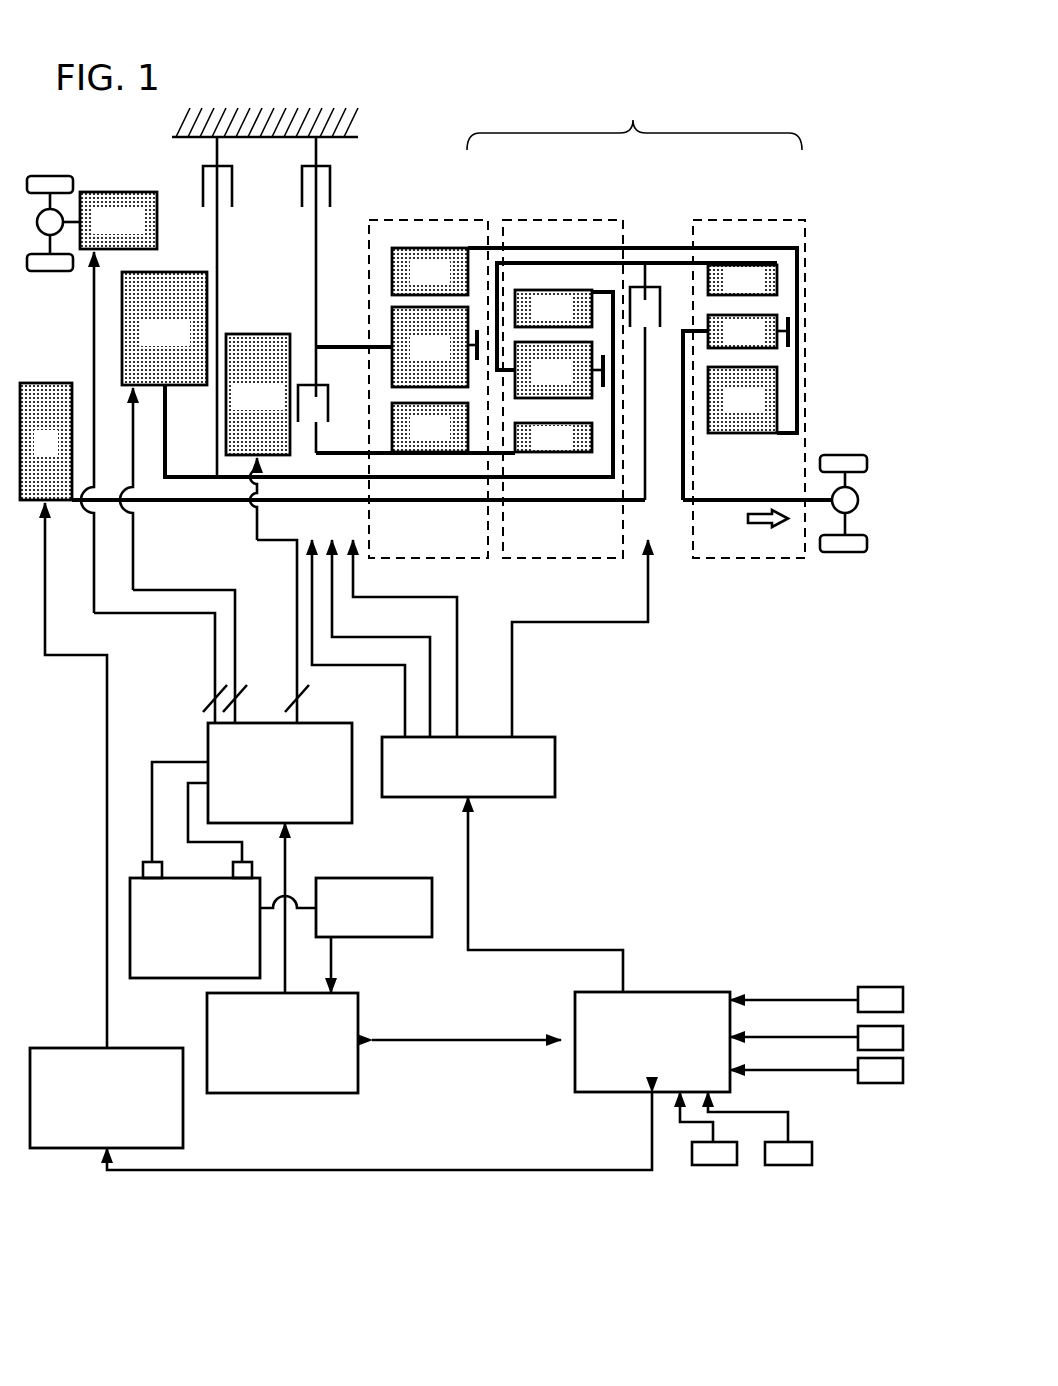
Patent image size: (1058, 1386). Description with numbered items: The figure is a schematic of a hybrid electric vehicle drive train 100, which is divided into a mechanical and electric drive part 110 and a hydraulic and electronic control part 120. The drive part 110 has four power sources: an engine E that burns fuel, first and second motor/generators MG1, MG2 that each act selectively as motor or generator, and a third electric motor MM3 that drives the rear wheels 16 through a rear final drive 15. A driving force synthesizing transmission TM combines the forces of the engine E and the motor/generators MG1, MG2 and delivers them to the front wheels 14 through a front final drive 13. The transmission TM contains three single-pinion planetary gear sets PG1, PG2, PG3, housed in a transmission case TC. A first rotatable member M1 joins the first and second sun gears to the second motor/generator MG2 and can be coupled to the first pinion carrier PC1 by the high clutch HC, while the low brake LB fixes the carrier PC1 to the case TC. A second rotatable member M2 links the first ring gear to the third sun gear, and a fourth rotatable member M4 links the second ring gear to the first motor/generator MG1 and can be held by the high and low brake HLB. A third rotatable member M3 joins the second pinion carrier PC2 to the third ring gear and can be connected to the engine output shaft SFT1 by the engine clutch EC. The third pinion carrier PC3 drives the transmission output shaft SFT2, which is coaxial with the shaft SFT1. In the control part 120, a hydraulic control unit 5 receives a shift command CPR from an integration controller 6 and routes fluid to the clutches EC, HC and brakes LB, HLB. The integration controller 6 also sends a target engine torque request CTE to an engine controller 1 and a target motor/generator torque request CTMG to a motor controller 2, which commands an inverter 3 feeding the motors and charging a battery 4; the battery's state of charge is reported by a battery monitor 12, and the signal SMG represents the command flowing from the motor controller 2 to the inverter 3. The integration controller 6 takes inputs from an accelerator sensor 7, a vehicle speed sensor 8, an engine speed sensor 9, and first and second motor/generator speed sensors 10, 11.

The engine controller 1 is at (80, 1048).
The motor controller 2 is at (356, 993).
The inverter 3 is at (322, 722).
The battery 4 is at (187, 878).
The hydraulic control unit 5 is at (555, 766).
The integration controller 6 is at (700, 992).
The accelerator sensor 7 is at (880, 987).
The vehicle speed sensor 8 is at (903, 1038).
The engine speed sensor 9 is at (870, 1083).
The first motor/generator speed sensor 10 is at (695, 1165).
The second motor/generator speed sensor 11 is at (782, 1165).
The battery monitor 12 is at (400, 878).
The front final drive 13 is at (840, 512).
The front wheels 14 is at (838, 455).
The rear final drive 15 is at (64, 213).
The rear wheels 16 is at (58, 176).
The drive train 100 is at (820, 722).
The mechanical and electric drive part 110 is at (703, 676).
The hydraulic and electronic control part 120 is at (684, 811).
The engine E is at (46, 441).
The first motor/generator MG1 is at (164, 328).
The second motor/generator MG2 is at (258, 394).
The third electric motor MM3 is at (118, 220).
The driving force synthesizing transmission TM is at (634, 118).
The transmission case TC is at (352, 137).
The first planetary gear set PG1 is at (390, 218).
The second planetary gear set PG2 is at (522, 218).
The third planetary gear set PG3 is at (723, 218).
The high and low brake HLB is at (203, 184).
The low brake LB is at (298, 191).
The high clutch HC is at (328, 401).
The engine clutch EC is at (655, 318).
The first rotatable member M1 is at (505, 453).
The second rotatable member M2 is at (640, 247).
The third rotatable member M3 is at (540, 263).
The fourth rotatable member M4 is at (180, 477).
The first pinion carrier PC1 is at (383, 346).
The second pinion carrier PC2 is at (600, 390).
The third pinion carrier PC3 is at (782, 313).
The output shaft of the engine SFT1 is at (188, 503).
The output shaft of the transmission SFT2 is at (740, 505).
The motor control signal SMG is at (308, 908).
The shift command CPR is at (545, 894).
The target engine torque request CTE is at (379, 1131).
The target motor/generator torque request CTMG is at (466, 1026).